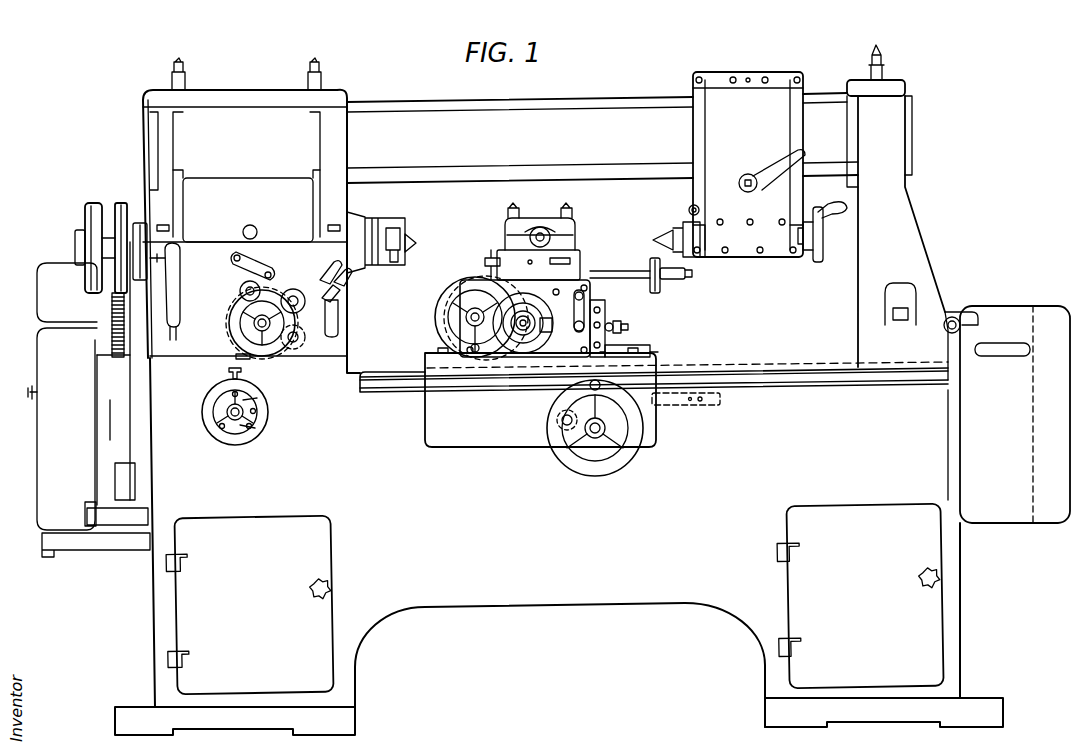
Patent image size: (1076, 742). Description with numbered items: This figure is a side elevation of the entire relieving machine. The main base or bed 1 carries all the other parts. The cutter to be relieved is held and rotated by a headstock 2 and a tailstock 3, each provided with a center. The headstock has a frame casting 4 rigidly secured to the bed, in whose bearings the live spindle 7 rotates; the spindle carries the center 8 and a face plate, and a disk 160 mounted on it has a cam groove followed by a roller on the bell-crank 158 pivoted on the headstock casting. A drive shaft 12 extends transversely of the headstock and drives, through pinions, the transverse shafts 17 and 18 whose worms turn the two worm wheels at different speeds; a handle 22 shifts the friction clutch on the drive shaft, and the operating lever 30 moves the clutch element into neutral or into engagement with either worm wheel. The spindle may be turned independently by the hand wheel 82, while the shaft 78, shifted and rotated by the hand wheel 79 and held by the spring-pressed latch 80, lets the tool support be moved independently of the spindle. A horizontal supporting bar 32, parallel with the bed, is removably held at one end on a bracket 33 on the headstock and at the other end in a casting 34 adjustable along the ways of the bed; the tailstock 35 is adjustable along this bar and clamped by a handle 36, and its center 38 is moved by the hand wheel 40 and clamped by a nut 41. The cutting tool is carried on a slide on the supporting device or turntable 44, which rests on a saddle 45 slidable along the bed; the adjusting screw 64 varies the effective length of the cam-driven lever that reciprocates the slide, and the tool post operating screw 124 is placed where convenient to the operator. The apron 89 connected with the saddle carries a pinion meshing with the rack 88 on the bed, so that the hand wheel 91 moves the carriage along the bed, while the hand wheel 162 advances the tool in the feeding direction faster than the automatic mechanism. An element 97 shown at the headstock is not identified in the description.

The main base or bed 1 is at (523, 606).
The headstock 2 is at (376, 231).
The tailstock 3 is at (748, 243).
The frame casting 4 is at (345, 307).
The live spindle 7 is at (78, 250).
The center 8 is at (408, 244).
The drive shaft 12 is at (252, 323).
The transverse shaft 17 is at (241, 291).
The transverse shaft 18 is at (296, 291).
The handle 22 is at (347, 278).
The operating lever 30 is at (264, 268).
The horizontal supporting bar 32 is at (603, 110).
The bracket 33 is at (242, 100).
The casting 34 is at (906, 221).
The tailstock 35 is at (752, 74).
The handle 36 is at (760, 172).
The center 38 is at (655, 238).
The hand wheel 40 is at (820, 250).
The nut 41 is at (690, 210).
The supporting device or turntable 44 is at (630, 282).
The saddle 45 is at (640, 355).
The adjusting screw 64 is at (630, 328).
The longitudinally movable shaft 78 is at (212, 413).
The hand wheel 79 is at (265, 412).
The spring-pressed latch 80 is at (227, 369).
The hand wheel 82 is at (275, 348).
The rack 88 is at (673, 405).
The apron 89 is at (450, 437).
The hand wheel 91 is at (620, 452).
The lever 97 is at (175, 252).
The tool post operating screw 124 is at (686, 282).
The bell-crank 158 is at (132, 300).
The disk 160 is at (118, 205).
The hand wheel 162 is at (440, 322).